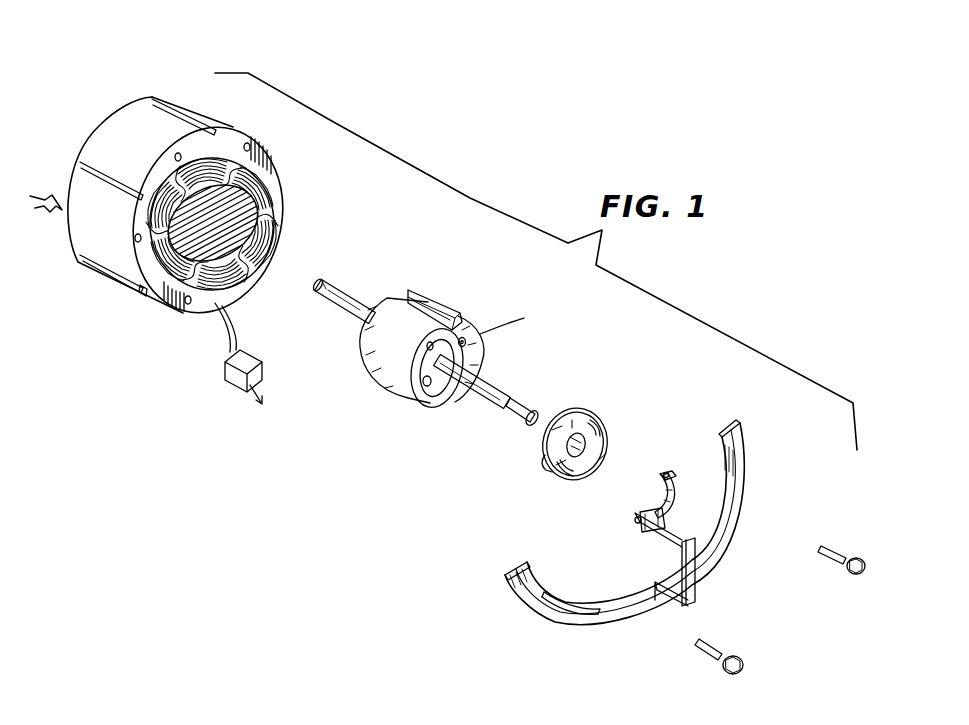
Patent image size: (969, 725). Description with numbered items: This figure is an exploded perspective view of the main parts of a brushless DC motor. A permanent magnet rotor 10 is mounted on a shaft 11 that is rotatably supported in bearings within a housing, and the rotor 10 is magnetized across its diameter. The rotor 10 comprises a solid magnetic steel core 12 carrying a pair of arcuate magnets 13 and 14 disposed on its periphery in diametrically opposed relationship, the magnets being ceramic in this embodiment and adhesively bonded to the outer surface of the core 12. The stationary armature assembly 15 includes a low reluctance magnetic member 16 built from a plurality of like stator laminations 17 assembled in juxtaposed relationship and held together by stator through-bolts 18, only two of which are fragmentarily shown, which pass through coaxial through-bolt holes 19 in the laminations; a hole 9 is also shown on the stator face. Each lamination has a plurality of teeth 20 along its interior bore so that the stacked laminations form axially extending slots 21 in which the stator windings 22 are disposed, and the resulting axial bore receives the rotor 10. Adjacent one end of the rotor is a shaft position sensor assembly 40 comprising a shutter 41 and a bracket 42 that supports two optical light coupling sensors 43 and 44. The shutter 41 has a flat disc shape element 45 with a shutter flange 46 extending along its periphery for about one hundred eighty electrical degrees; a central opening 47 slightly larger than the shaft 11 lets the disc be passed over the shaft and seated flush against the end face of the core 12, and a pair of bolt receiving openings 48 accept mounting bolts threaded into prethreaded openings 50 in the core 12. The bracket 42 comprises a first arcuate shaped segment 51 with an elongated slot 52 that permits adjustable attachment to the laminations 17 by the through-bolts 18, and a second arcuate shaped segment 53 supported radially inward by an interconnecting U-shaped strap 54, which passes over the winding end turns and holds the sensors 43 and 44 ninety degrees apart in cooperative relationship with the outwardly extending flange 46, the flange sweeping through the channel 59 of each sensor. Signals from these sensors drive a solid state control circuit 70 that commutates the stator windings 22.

The mounting hole 9 is at (138, 233).
The permanent magnet rotor 10 is at (452, 267).
The shaft 11 is at (357, 297).
The solid magnetic steel core 12 is at (423, 413).
The arcuate magnet 13 is at (402, 400).
The arcuate magnet 14 is at (472, 319).
The stationary armature assembly 15 is at (106, 294).
The low reluctance magnetic member 16 is at (263, 160).
The stator lamination 17 is at (217, 124).
The stator through-bolt 18 is at (707, 663).
The through-bolt hole 19 is at (248, 134).
The tooth 20 is at (232, 222).
The slot 21 is at (263, 240).
The stator winding 22 is at (272, 210).
The shaft position sensor assembly 40 is at (563, 538).
The shutter 41 is at (582, 410).
The bracket 42 is at (703, 568).
The optical light coupling sensor 43 is at (662, 473).
The optical light coupling sensor 44 is at (635, 500).
The flat disc shape element 45 is at (590, 447).
The shutter flange 46 is at (550, 468).
The central opening 47 is at (590, 470).
The bolt receiving opening 48 is at (598, 423).
The prethreaded opening 50 is at (472, 343).
The first arcuate shaped segment 51 is at (583, 607).
The elongated slot 52 is at (590, 607).
The second arcuate shaped segment 53 is at (675, 490).
The U-shaped strap 54 is at (683, 533).
The channel 59 is at (668, 473).
The control circuit 70 is at (223, 380).